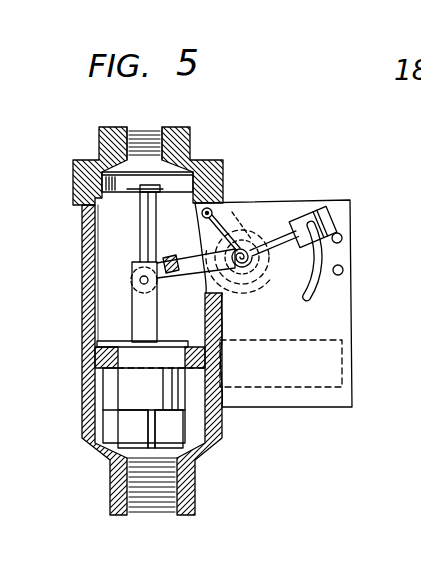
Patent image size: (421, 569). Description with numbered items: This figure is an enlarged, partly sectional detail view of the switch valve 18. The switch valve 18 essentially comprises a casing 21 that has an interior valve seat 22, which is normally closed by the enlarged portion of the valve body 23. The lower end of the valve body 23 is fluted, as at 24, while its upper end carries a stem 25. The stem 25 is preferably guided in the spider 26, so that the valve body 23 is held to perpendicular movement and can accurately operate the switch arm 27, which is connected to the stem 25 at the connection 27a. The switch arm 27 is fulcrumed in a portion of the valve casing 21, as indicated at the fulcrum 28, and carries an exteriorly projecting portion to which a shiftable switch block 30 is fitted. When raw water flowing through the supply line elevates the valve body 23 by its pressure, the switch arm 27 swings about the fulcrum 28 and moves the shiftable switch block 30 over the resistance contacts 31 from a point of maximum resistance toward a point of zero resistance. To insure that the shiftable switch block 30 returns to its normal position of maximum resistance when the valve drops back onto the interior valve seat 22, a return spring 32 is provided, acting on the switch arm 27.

The switch valve 18 is at (82, 318).
The casing 21 is at (221, 345).
The interior valve seat 22 is at (192, 350).
The valve body 23 is at (144, 405).
The fluted lower end 24 is at (132, 430).
The stem 25 is at (150, 315).
The spider 26 is at (132, 192).
The switch arm 27 is at (185, 264).
The connection of switch arm to stem 27a is at (137, 279).
The fulcrum 28 is at (253, 247).
The shiftable switch block 30 is at (304, 248).
The resistance contacts 31 is at (378, 241).
The return spring 32 is at (233, 225).